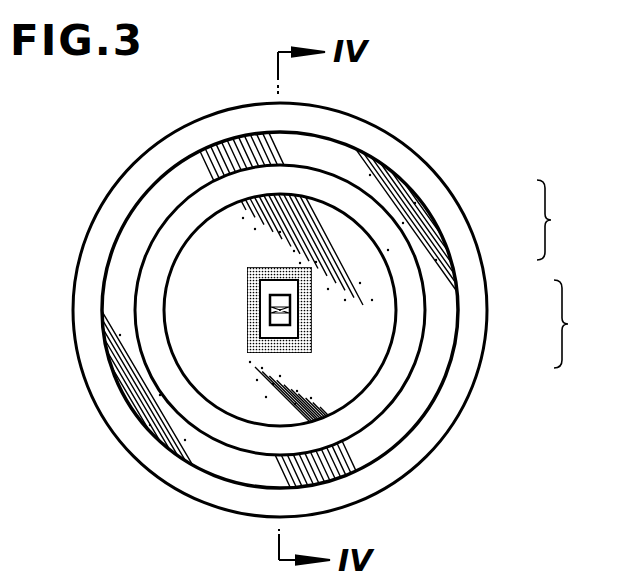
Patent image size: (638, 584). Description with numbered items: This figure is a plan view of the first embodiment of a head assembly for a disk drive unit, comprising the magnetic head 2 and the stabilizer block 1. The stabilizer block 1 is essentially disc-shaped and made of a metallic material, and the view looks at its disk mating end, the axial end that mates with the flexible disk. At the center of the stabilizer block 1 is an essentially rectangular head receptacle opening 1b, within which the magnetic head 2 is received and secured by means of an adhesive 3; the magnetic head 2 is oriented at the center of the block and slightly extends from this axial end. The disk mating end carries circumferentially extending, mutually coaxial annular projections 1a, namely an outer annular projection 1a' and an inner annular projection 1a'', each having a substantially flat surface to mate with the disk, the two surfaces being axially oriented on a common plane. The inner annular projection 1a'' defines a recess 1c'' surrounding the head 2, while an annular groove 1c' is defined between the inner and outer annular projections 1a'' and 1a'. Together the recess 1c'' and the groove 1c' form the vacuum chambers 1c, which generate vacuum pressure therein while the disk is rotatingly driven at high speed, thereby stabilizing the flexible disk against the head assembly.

The stabilizer block 1 is at (141, 474).
The annular projections 1a is at (559, 220).
The outer annular projection 1a' is at (317, 310).
The inner annular projection 1a'' is at (350, 310).
The head receptacle opening 1b is at (250, 333).
The vacuum chambers 1c is at (576, 324).
The annular groove 1c' is at (325, 309).
The recess 1c'' is at (396, 308).
The magnetic head 2 is at (290, 315).
The adhesive 3 is at (250, 281).